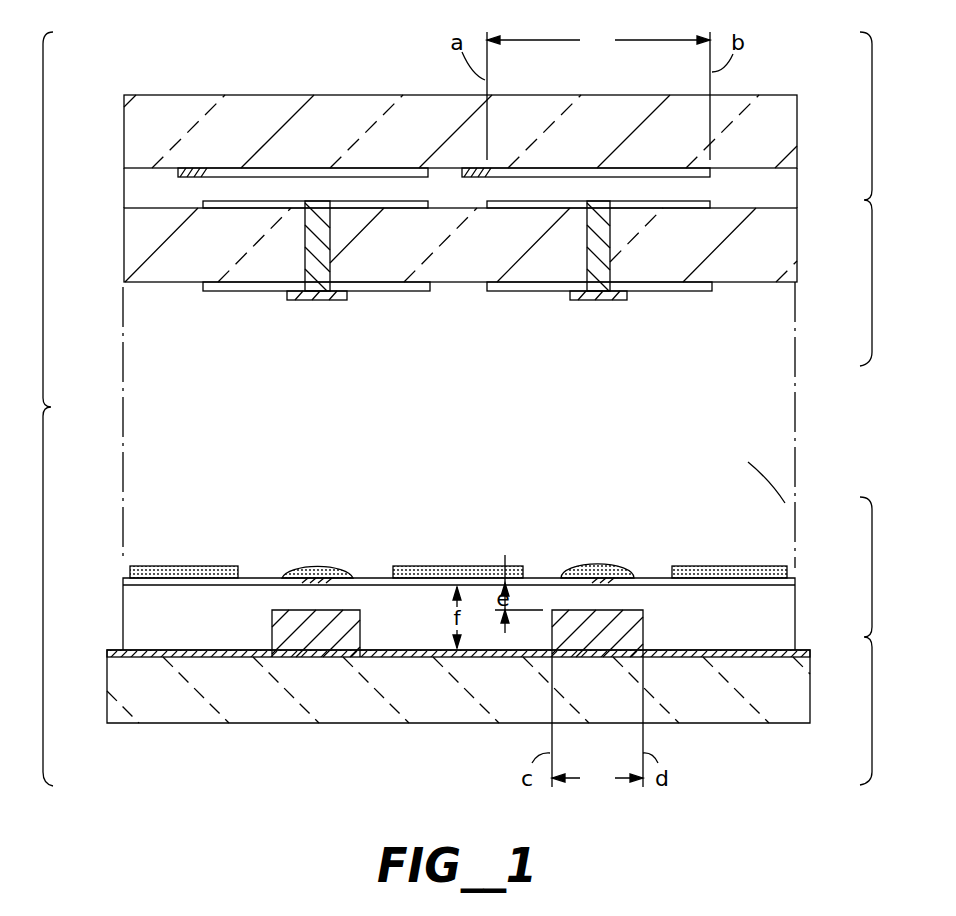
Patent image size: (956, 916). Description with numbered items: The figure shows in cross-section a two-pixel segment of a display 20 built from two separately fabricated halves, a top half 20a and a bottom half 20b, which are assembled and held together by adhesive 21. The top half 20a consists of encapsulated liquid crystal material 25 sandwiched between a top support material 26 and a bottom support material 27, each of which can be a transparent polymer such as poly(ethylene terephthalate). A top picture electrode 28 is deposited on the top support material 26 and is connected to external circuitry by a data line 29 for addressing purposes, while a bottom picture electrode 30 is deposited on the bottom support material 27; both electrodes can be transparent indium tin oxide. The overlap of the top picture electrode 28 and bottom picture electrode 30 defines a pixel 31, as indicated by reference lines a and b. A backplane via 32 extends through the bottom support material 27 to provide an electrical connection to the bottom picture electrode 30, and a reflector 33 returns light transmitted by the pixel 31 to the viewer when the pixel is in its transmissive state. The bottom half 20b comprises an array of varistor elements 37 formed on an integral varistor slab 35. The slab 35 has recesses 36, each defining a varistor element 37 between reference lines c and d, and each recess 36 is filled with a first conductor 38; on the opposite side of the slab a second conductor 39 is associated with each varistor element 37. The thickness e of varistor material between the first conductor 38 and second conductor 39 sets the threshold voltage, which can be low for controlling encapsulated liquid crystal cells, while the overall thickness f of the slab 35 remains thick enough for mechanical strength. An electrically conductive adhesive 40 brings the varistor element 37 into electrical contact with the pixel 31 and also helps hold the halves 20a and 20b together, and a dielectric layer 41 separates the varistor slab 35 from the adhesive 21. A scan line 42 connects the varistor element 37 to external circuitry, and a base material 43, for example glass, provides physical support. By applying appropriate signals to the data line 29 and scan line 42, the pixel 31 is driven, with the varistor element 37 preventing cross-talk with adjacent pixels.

The display 20 is at (62, 409).
The top half 20a is at (845, 199).
The bottom half 20b is at (847, 641).
The adhesive 21 is at (190, 575).
The encapsulated liquid crystal material 25 is at (138, 192).
The top support material 26 is at (180, 130).
The bottom support material 27 is at (188, 258).
The top picture electrode 28 is at (537, 168).
The data line 29 is at (472, 177).
The bottom picture electrode 30 is at (667, 203).
The pixel 31 is at (598, 94).
The backplane via 32 is at (598, 285).
The reflector 33 is at (393, 290).
The varistor slab 35 is at (138, 622).
The recess 36 is at (552, 633).
The varistor element 37 is at (597, 724).
The first conductor 38 is at (627, 627).
The second conductor 39 is at (330, 577).
The electrically conductive adhesive 40 is at (313, 565).
The dielectric layer 41 is at (650, 578).
The scan line 42 is at (208, 658).
The base material 43 is at (338, 697).